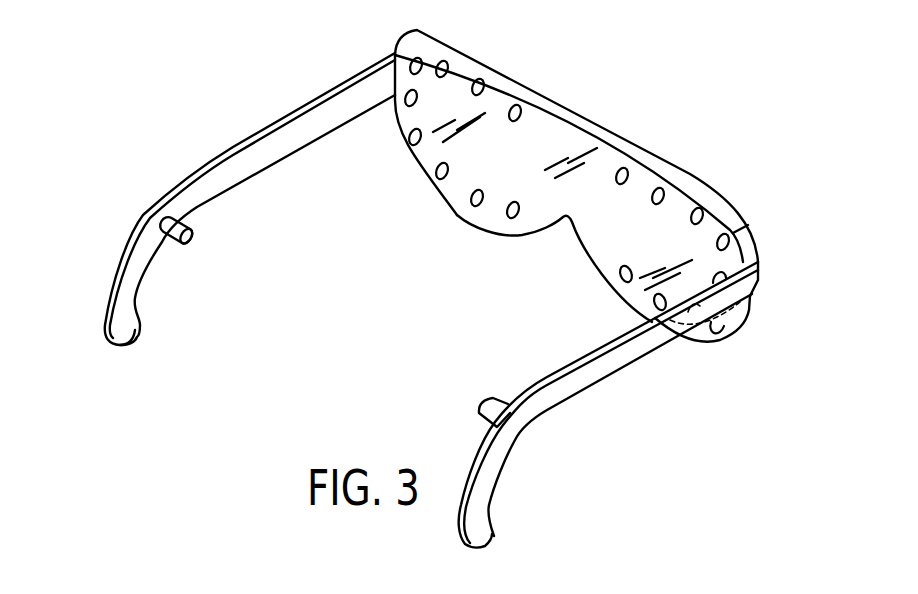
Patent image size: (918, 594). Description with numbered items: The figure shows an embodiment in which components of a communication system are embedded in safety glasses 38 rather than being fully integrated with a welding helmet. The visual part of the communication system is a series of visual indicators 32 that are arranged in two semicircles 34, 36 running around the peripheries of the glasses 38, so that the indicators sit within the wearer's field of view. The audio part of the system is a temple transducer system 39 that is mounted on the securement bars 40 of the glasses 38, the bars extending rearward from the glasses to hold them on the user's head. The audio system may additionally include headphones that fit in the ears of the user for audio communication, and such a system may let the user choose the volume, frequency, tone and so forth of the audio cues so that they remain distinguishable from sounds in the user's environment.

The safety glasses 38 is at (610, 66).
The semicircle 34 is at (428, 159).
The visual indicators 32 is at (510, 209).
The semicircle 36 is at (740, 318).
The securement bars 40 is at (150, 225).
The temple transducer system 39 is at (193, 226).